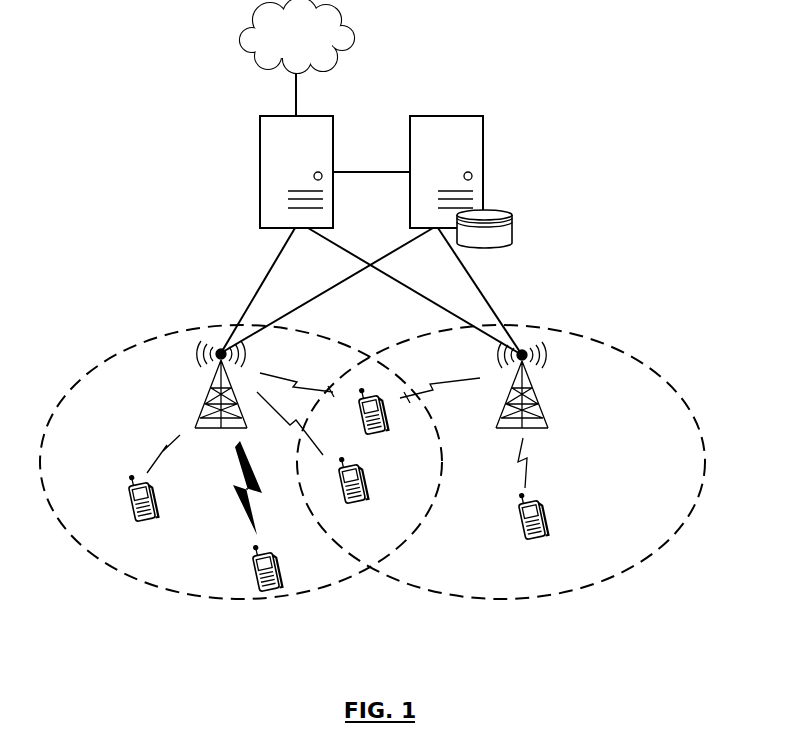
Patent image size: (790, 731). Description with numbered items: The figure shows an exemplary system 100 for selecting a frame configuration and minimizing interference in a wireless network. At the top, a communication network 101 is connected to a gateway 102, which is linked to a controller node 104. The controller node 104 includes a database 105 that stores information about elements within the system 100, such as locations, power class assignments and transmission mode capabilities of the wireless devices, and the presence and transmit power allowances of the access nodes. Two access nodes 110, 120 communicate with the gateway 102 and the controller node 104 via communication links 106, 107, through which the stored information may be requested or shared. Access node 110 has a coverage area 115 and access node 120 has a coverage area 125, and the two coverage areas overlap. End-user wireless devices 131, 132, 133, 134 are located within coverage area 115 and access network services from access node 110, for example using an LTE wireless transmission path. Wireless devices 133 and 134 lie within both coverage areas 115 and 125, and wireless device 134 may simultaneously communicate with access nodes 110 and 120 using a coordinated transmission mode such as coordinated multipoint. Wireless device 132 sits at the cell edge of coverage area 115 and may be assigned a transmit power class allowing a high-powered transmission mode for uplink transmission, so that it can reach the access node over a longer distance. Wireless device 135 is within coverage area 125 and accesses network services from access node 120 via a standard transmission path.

The system 100 is at (446, 52).
The communication network 101 is at (277, 46).
The gateway 102 is at (260, 143).
The controller node 104 is at (483, 158).
The database 105 is at (513, 233).
The communication link 106 is at (353, 255).
The communication link 107 is at (320, 294).
The access node 110 is at (207, 410).
The coverage area 115 is at (157, 339).
The access node 120 is at (540, 410).
The coverage area 125 is at (590, 340).
The end-user wireless device 131 is at (139, 522).
The end-user wireless device 132 is at (263, 594).
The end-user wireless device 133 is at (350, 504).
The end-user wireless device 134 is at (372, 436).
The end-user wireless device 135 is at (531, 541).